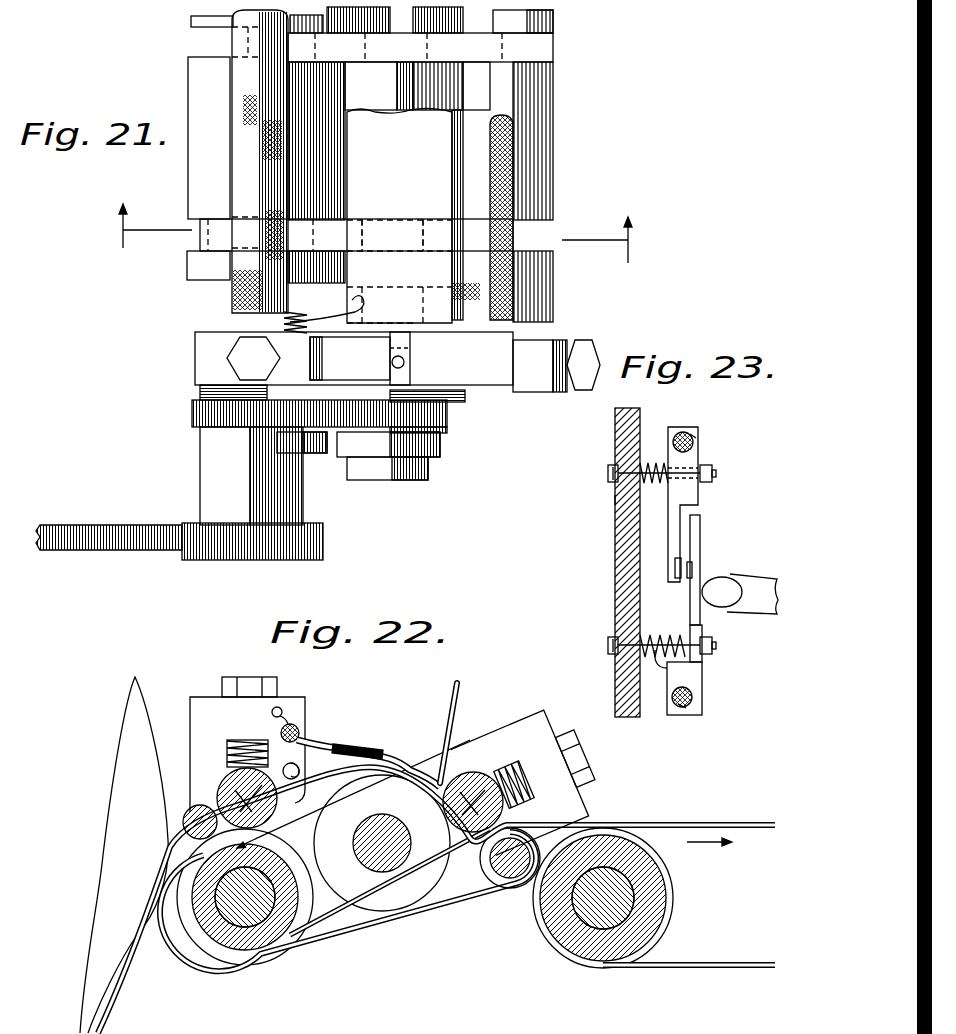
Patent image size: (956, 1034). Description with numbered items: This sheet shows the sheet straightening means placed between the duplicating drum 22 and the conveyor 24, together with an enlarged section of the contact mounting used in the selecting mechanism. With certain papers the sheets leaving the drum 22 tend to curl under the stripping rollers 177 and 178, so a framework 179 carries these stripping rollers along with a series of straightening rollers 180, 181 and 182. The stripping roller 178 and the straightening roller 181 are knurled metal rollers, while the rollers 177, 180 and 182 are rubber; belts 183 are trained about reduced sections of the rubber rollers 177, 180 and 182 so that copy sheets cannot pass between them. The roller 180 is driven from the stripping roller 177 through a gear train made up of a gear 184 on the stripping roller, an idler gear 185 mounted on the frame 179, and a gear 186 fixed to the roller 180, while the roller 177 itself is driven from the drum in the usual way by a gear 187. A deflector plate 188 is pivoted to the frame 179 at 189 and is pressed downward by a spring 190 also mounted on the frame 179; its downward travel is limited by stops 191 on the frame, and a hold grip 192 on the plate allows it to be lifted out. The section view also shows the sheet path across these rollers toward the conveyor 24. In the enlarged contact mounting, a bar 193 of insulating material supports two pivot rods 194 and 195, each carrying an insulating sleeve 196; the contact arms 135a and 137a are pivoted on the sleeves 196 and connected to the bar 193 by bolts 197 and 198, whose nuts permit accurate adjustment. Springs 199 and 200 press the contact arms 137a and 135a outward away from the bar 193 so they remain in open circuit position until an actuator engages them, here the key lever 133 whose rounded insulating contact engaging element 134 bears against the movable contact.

In FIG. 21, the stripping roller 177 is at (202, 97).
In FIG. 22, the stripping roller 177 is at (200, 847).
In FIG. 21, the stripping roller 178 is at (240, 42).
In FIG. 22, the stripping roller 178 is at (270, 803).
In FIG. 21, the framework 179 is at (202, 357).
In FIG. 22, the framework 179 is at (207, 705).
In FIG. 21, the straightening roller 180 is at (462, 86).
In FIG. 22, the straightening roller 180 is at (407, 898).
In FIG. 21, the straightening roller 181 is at (513, 157).
In FIG. 22, the straightening roller 181 is at (473, 772).
In FIG. 21, the straightening roller 182 is at (555, 123).
In FIG. 22, the straightening roller 182 is at (483, 862).
In FIG. 21, the belts 183 is at (493, 50).
In FIG. 22, the belts 183 is at (353, 930).
In FIG. 21, the gear 184 is at (192, 412).
In FIG. 21, the idler gear 185 is at (310, 432).
In FIG. 21, the gear 186 is at (443, 432).
In FIG. 21, the gear 187 is at (138, 498).
In FIG. 21, the deflector plate 188 is at (420, 176).
In FIG. 22, the deflector plate 188 is at (413, 757).
In FIG. 21, the pivot 189 is at (287, 310).
In FIG. 22, the pivot 189 is at (329, 758).
In FIG. 21, the spring 190 is at (335, 320).
In FIG. 22, the spring 190 is at (303, 735).
In FIG. 21, the stops 191 is at (410, 357).
In FIG. 22, the stops 191 is at (397, 760).
In FIG. 22, the hold grip 192 is at (443, 697).
In FIG. 21, the drum 22 is at (367, 235).
In FIG. 22, the drum 22 is at (130, 755).
In FIG. 22, the conveyor 24 is at (747, 825).
In FIG. 23, the bar 193 is at (615, 553).
In FIG. 23, the pivot rod 194 is at (683, 708).
In FIG. 23, the pivot rod 195 is at (697, 447).
In FIG. 23, the sleeve 196 is at (694, 440).
In FIG. 23, the bolt 197 is at (630, 640).
In FIG. 23, the bolt 198 is at (615, 500).
In FIG. 23, the spring 199 is at (657, 463).
In FIG. 23, the spring 200 is at (700, 668).
In FIG. 23, the key lever 133 is at (748, 586).
In FIG. 23, the contact engaging element 134 is at (707, 583).
In FIG. 23, the contact arm 135a is at (697, 627).
In FIG. 23, the contact arm 137a is at (690, 495).